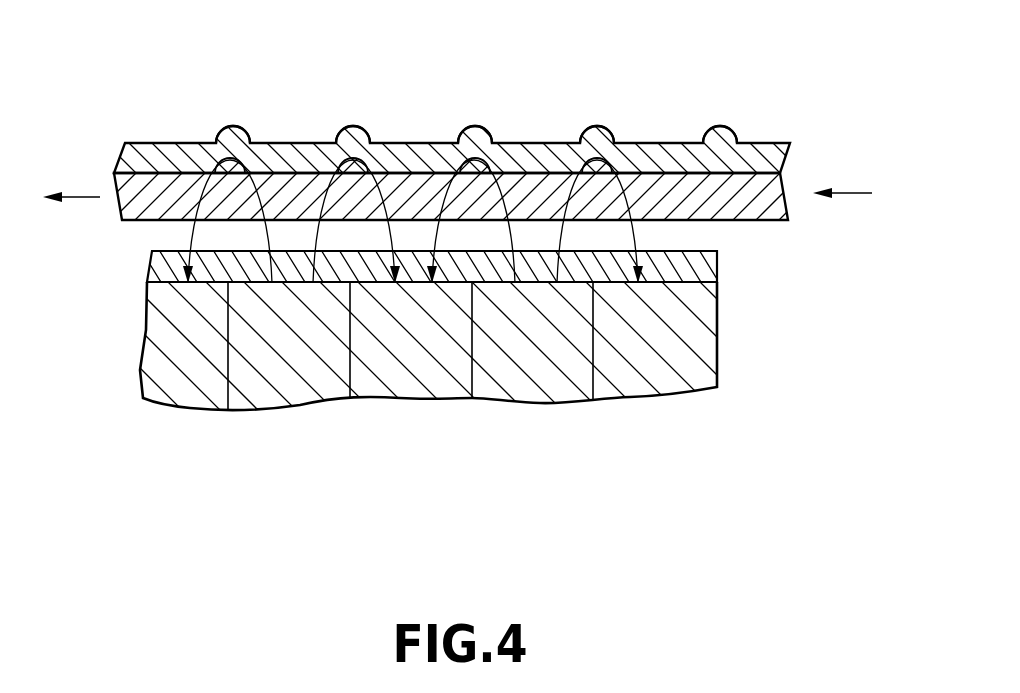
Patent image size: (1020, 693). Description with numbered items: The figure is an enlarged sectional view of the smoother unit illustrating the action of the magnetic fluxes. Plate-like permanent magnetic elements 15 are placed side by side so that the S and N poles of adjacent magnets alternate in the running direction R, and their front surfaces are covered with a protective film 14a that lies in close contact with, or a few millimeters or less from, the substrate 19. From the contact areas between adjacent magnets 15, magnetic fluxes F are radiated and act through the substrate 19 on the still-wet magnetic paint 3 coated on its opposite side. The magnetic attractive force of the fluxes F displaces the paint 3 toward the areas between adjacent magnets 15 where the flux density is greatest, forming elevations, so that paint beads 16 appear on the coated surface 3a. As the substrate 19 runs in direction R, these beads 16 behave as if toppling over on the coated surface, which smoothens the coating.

The magnetic paint 3 is at (474, 145).
The coated surface 3a is at (412, 140).
The paint beads 16 is at (708, 131).
The substrate 19 is at (745, 206).
The protective film 14a is at (718, 262).
The permanent magnetic elements 15 is at (502, 387).
The magnetic fluxes F is at (316, 200).
The running direction R is at (84, 200).